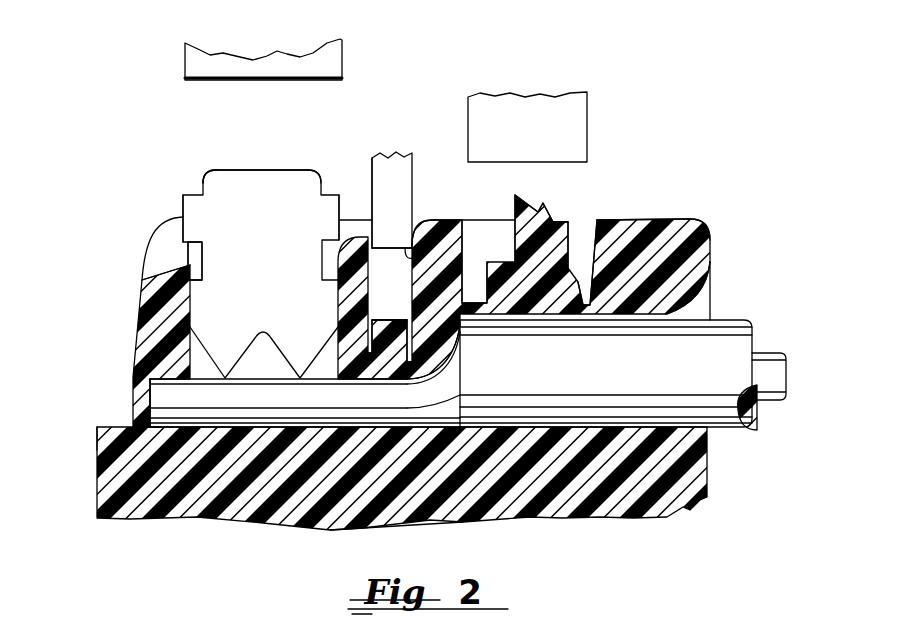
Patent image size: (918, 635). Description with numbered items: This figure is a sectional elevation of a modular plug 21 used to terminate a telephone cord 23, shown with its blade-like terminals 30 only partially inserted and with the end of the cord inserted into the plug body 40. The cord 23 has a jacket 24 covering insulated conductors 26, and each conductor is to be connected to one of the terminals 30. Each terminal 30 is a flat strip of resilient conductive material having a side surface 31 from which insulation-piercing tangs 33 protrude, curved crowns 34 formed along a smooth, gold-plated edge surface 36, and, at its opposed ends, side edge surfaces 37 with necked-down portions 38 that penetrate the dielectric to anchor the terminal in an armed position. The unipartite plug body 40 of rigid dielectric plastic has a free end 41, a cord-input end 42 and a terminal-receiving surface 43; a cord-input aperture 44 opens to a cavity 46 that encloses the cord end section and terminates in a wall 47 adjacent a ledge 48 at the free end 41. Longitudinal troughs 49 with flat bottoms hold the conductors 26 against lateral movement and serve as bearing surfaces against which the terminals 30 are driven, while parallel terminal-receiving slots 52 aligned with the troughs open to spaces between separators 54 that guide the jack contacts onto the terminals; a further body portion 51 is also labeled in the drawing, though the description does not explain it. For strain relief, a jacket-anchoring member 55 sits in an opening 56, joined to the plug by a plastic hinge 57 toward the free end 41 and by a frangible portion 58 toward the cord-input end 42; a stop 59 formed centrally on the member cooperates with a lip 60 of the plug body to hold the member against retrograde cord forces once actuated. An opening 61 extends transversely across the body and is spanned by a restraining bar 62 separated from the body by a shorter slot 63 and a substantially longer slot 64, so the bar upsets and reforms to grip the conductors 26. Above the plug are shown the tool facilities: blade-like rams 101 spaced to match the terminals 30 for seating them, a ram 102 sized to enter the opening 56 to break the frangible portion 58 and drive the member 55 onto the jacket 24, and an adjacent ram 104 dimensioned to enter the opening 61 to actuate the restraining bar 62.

The modular plug 21 is at (667, 195).
The cord 23 is at (738, 316).
The jacket 24 is at (752, 430).
The insulated conductors 26 is at (142, 398).
The terminals 30 is at (243, 168).
The side surface 31 is at (202, 187).
The insulation-piercing tangs 33 is at (220, 343).
The curved crowns 34 is at (210, 167).
The edge surface 36 is at (280, 168).
The side edge surfaces 37 is at (190, 208).
The necked-down portions 38 is at (193, 252).
The plug body 40 is at (668, 522).
The free end 41 is at (140, 295).
The cord-input end 42 is at (703, 232).
The terminal-receiving surface 43 is at (438, 220).
The cord-input aperture 44 is at (700, 290).
The cavity 46 is at (457, 520).
The wall 47 is at (140, 405).
The ledge 48 is at (118, 422).
The troughs 49 is at (160, 425).
The passage 51 is at (372, 228).
The terminal-receiving slots 52 is at (152, 268).
The separators 54 is at (383, 155).
The jacket-anchoring member 55 is at (545, 228).
The opening 56 is at (473, 227).
The plastic hinge 57 is at (480, 273).
The frangible portion 58 is at (590, 300).
The stop 59 is at (550, 215).
The lip 60 is at (674, 202).
The opening 61 is at (406, 242).
The restraining bar 62 is at (395, 323).
The slot 63 is at (372, 322).
The slot 64 is at (412, 333).
The blade-like rams 101 is at (275, 62).
The ram 102 is at (335, 252).
The ram 104 is at (515, 120).